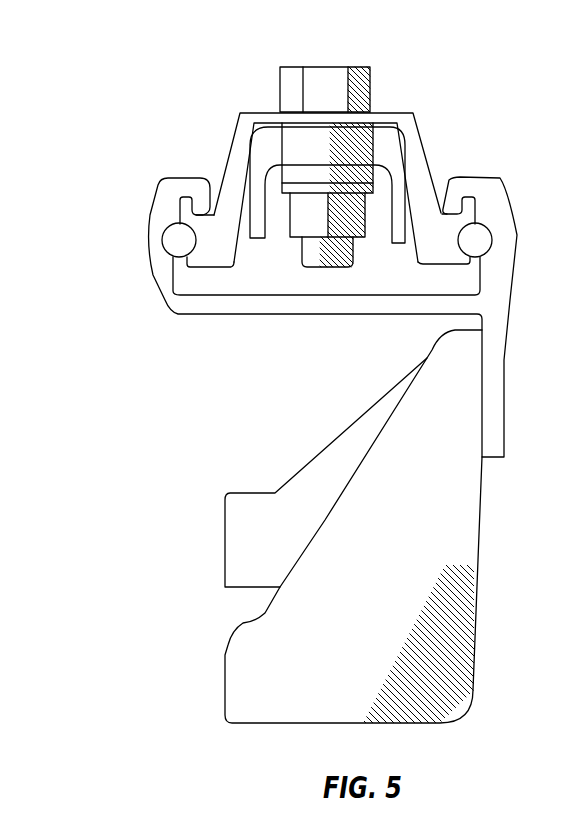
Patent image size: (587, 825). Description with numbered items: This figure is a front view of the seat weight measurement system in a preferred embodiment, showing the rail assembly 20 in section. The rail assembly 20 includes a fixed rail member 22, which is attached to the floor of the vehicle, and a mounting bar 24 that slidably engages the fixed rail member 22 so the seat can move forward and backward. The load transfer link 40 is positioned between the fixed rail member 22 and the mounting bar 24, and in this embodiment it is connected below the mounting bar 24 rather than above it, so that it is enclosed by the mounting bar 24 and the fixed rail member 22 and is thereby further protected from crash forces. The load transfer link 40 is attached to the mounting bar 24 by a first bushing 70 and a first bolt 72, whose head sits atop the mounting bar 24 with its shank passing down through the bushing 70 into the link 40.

The rail assembly 20 is at (128, 74).
The fixed rail member 22 is at (155, 278).
The mounting bar 24 is at (232, 146).
The load transfer link 40 is at (403, 167).
The first bushing 70 is at (377, 133).
The first bolt 72 is at (371, 84).